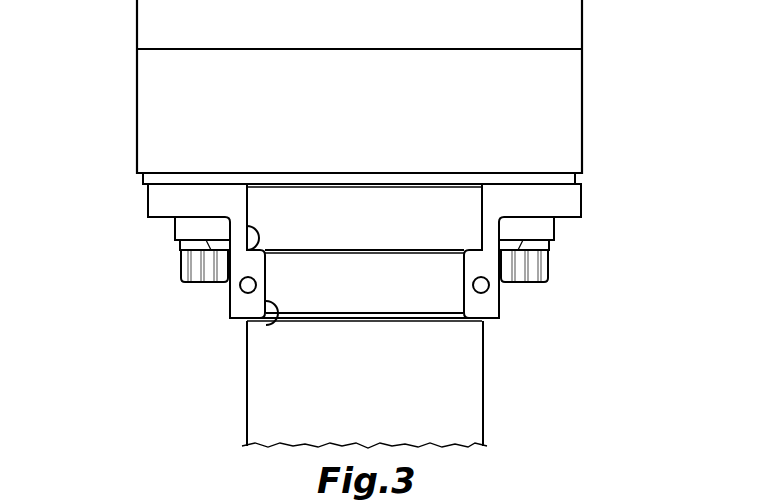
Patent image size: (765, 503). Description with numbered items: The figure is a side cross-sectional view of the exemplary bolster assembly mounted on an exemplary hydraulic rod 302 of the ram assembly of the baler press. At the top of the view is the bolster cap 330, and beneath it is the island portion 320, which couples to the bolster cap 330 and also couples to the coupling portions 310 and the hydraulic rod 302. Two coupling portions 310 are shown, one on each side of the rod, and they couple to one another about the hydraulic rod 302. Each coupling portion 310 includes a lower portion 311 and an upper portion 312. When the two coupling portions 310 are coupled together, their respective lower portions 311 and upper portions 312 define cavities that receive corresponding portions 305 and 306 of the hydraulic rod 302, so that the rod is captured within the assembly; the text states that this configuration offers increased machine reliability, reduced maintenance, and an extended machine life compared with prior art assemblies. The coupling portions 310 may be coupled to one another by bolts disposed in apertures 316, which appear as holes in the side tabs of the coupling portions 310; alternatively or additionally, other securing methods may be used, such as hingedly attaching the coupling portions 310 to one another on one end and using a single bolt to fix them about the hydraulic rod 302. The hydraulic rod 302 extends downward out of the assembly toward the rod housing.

The hydraulic rod 302 is at (475, 395).
The portion of the hydraulic rod 305 is at (400, 302).
The portion of the hydraulic rod 306 is at (453, 220).
The coupling portion 310 is at (158, 202).
The lower portion 311 is at (275, 323).
The upper portion 312 is at (260, 250).
The aperture 316 is at (481, 285).
The island portion 320 is at (145, 178).
The bolster cap 330 is at (570, 115).